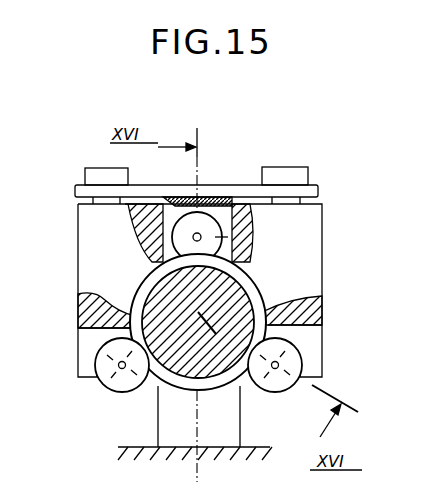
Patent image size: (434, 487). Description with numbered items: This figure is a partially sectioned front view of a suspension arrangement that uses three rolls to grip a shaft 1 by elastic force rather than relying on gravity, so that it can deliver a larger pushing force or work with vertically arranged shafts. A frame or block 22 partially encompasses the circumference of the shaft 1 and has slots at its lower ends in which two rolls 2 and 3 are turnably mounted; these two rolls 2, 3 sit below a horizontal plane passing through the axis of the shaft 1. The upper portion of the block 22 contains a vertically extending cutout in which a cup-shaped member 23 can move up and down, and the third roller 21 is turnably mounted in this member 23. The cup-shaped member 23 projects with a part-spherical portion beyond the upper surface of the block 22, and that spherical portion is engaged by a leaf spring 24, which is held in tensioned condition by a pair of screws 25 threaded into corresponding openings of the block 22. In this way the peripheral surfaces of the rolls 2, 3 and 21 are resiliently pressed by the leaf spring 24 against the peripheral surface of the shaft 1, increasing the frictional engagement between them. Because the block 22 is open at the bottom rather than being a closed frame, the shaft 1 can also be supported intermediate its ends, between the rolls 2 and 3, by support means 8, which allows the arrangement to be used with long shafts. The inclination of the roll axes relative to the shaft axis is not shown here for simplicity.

The shaft 1 is at (268, 282).
The roll 2 is at (100, 356).
The roll 3 is at (293, 362).
The support means 8 is at (167, 402).
The third roller 21 is at (232, 237).
The frame or block 22 is at (308, 262).
The cup-shaped member 23 is at (223, 200).
The leaf spring 24 is at (215, 186).
The screws 25 is at (100, 174).